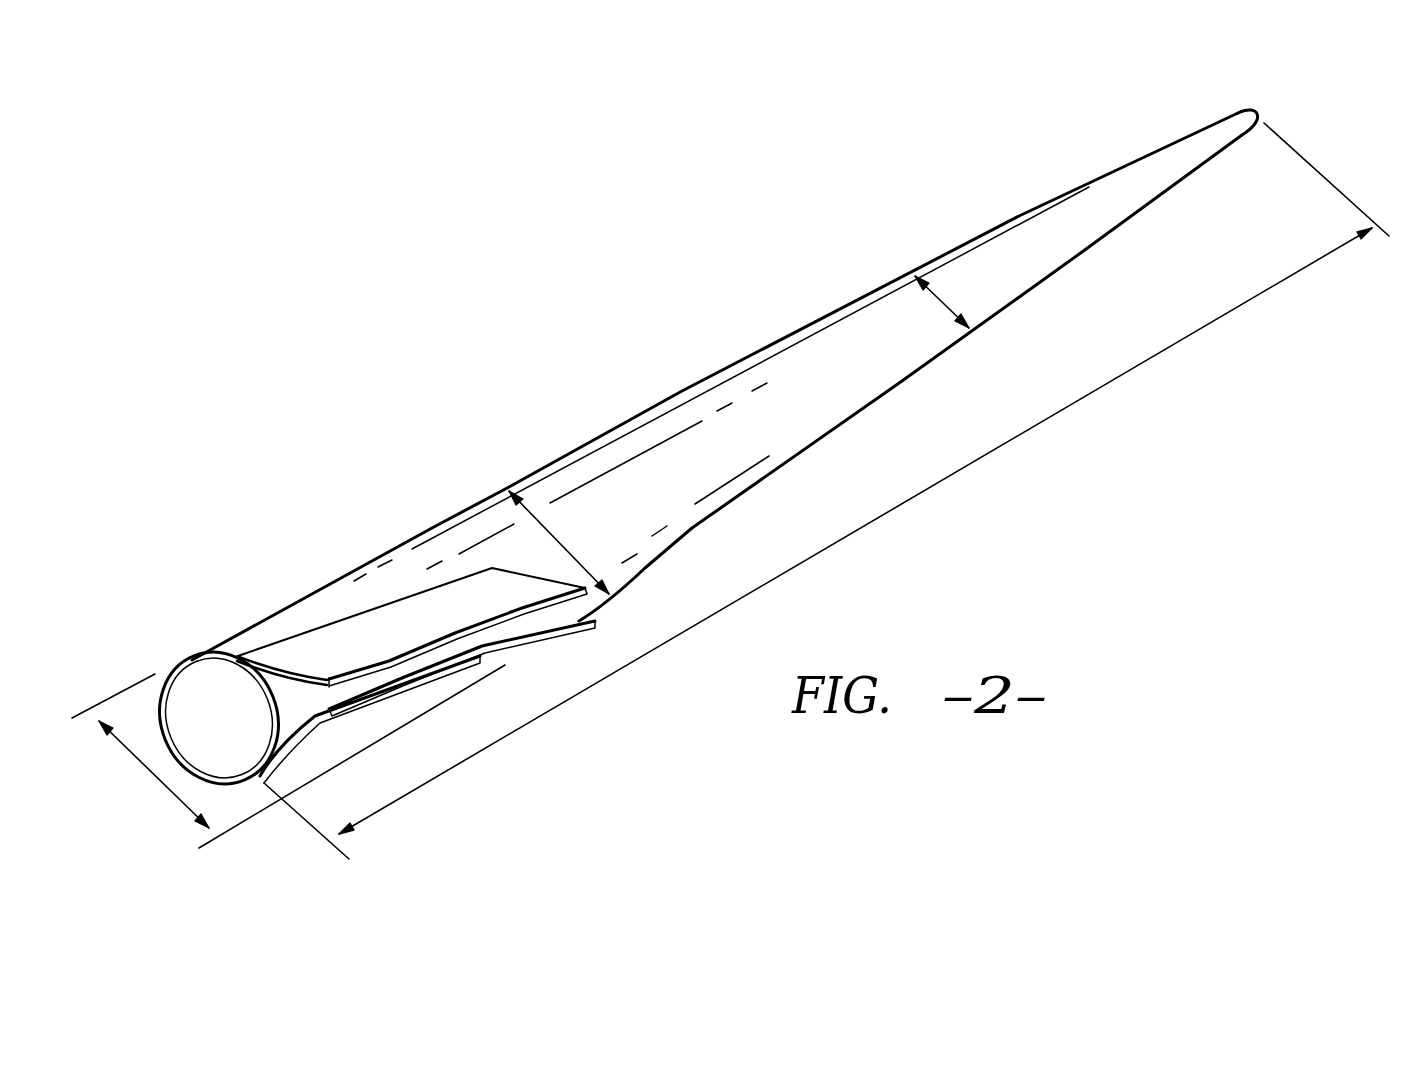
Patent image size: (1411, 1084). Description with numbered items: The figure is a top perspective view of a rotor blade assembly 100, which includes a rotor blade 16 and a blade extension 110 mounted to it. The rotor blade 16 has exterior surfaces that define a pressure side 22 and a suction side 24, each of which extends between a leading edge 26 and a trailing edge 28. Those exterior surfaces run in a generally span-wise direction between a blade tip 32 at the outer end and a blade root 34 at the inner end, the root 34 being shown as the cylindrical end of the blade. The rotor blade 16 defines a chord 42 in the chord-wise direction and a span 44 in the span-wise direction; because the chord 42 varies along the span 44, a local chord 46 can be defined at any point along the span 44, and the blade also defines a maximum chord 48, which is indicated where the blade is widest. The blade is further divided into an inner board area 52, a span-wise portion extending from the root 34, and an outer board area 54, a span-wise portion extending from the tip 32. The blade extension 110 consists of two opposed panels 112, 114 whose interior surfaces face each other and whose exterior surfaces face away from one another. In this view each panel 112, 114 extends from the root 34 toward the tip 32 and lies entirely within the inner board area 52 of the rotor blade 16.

The rotor blade assembly 100 is at (730, 491).
The rotor blade 16 is at (777, 376).
The pressure side 22 is at (690, 528).
The suction side 24 is at (780, 403).
The leading edge 26 is at (695, 382).
The trailing edge 28 is at (748, 480).
The blade tip 32 is at (1258, 102).
The blade root 34 is at (228, 740).
The chord 42 is at (150, 775).
The span 44 is at (1020, 432).
The local chord 46 is at (947, 312).
The maximum chord 48 is at (527, 512).
The inner board area 52 is at (375, 590).
The outer board area 54 is at (867, 333).
The blade extension 110 is at (323, 652).
The panel 112 is at (452, 607).
The panel 114 is at (340, 717).